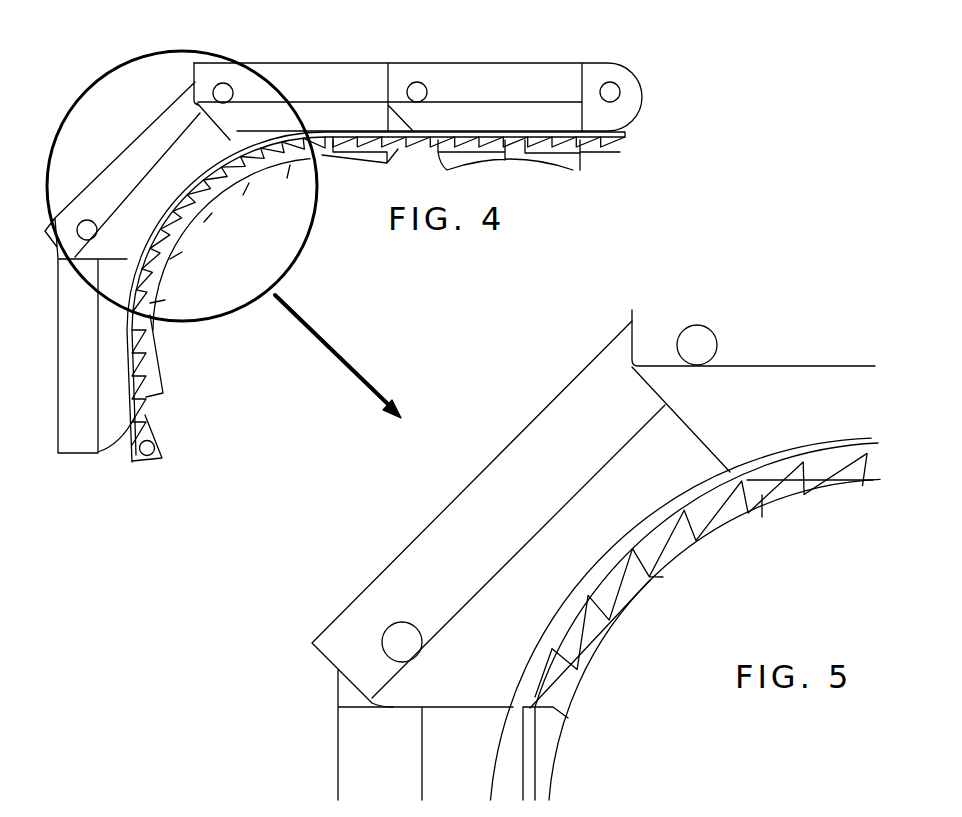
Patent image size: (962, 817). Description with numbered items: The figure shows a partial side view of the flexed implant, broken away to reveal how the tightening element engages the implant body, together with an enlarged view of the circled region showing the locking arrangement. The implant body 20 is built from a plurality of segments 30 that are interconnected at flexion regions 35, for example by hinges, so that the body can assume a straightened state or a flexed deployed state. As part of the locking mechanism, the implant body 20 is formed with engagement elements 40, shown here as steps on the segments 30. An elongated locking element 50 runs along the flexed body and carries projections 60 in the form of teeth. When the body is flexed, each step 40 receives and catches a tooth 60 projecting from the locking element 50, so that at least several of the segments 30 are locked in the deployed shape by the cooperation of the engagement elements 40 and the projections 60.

In FIG. 4, the implant body 20 is at (495, 63).
In FIG. 5, the segment 30 is at (568, 398).
In FIG. 4, the flexion region 35 is at (225, 88).
In FIG. 5, the flexion region 35 is at (400, 638).
In FIG. 4, the engagement element 40 is at (520, 143).
In FIG. 5, the engagement element 40 is at (628, 583).
In FIG. 4, the locking element 50 is at (610, 138).
In FIG. 4, the projection 60 is at (590, 138).
In FIG. 5, the projection 60 is at (678, 532).